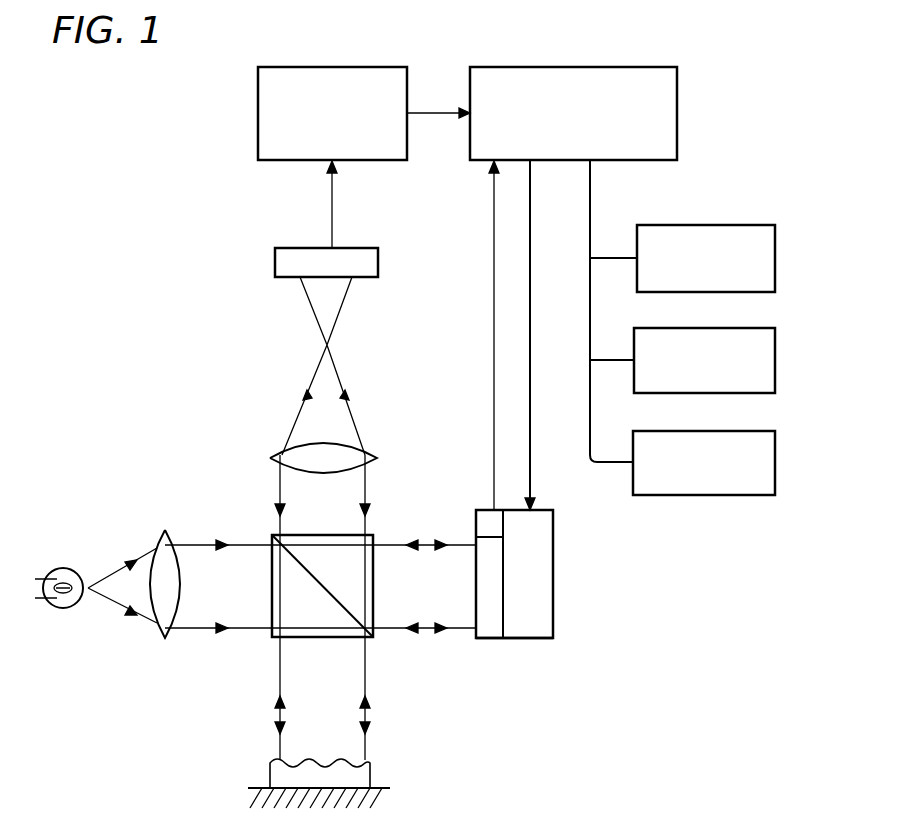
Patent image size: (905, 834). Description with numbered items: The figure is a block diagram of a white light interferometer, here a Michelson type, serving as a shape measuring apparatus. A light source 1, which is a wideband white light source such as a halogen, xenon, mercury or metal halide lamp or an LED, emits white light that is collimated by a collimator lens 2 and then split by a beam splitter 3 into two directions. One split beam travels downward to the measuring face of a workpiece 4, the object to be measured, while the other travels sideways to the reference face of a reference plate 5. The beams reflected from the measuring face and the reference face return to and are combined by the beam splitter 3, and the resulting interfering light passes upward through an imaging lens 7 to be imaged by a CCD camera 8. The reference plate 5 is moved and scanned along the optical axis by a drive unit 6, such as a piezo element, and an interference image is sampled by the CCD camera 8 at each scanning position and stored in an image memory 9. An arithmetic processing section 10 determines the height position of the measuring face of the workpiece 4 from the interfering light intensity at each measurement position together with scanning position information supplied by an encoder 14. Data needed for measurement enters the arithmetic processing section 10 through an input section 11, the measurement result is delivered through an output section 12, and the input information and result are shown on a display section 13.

The light source 1 is at (63, 568).
The collimator lens 2 is at (165, 530).
The beam splitter 3 is at (272, 588).
The workpiece 4 is at (370, 775).
The reference plate 5 is at (488, 640).
The drive unit 6 is at (553, 575).
The imaging lens 7 is at (270, 458).
The CCD camera 8 is at (275, 265).
The image memory 9 is at (258, 118).
The arithmetic processing section 10 is at (677, 115).
The input section 11 is at (775, 262).
The output section 12 is at (775, 364).
The display section 13 is at (775, 466).
The encoder 14 is at (476, 523).